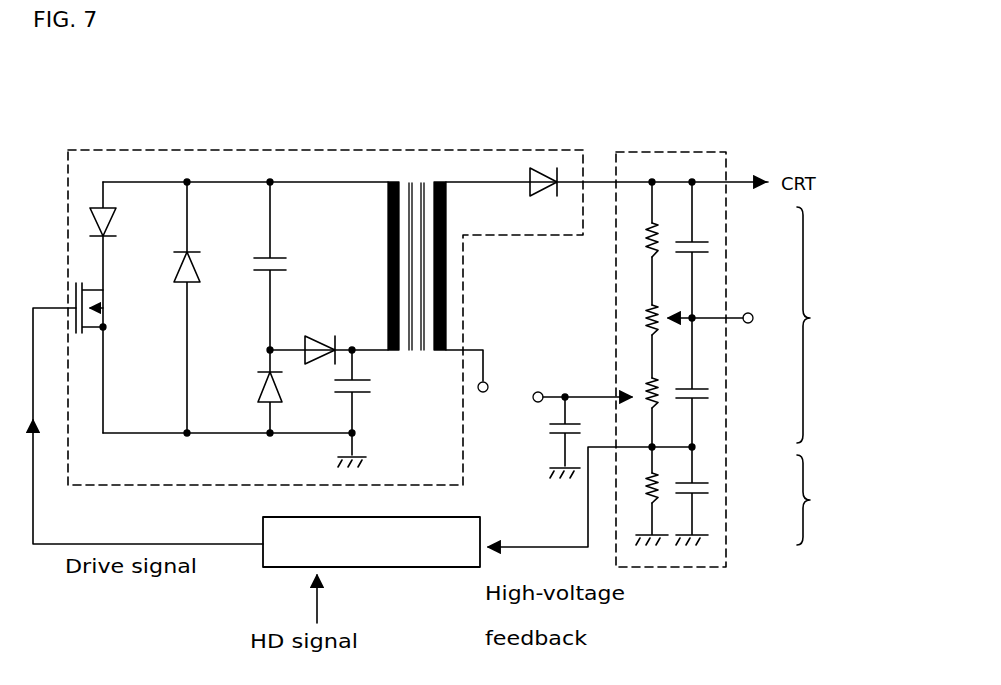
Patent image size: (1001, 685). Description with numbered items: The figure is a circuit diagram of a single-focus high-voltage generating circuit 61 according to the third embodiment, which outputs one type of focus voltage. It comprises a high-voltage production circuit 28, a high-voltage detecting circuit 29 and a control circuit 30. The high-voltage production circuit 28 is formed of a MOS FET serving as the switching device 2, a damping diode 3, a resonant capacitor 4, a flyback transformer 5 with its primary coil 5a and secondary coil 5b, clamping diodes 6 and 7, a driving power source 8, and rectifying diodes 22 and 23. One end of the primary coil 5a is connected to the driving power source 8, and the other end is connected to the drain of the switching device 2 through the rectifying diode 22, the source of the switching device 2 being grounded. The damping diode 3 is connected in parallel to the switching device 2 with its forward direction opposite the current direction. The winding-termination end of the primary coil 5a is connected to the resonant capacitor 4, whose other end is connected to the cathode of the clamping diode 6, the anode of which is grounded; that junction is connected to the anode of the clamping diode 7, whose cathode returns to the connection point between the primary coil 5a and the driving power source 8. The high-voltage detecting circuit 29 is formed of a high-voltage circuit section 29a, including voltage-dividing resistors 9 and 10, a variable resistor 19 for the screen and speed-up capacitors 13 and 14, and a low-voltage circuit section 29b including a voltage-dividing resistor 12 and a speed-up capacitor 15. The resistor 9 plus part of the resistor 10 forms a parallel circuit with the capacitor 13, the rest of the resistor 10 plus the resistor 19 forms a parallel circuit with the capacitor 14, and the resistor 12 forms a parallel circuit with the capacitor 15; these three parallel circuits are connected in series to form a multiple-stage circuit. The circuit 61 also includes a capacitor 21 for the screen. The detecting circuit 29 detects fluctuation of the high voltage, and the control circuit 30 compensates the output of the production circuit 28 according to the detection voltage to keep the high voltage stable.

The switching device 2 is at (90, 330).
The damping diode 3 is at (185, 284).
The resonant capacitor 4 is at (280, 253).
The flyback transformer 5 is at (420, 221).
The primary coil 5a is at (388, 222).
The secondary coil 5b is at (446, 220).
The clamping diode 6 is at (258, 383).
The clamping diode 7 is at (320, 338).
The driving power source 8 is at (356, 392).
The voltage-dividing resistor 9 is at (645, 243).
The voltage-dividing resistor 10 is at (645, 330).
The voltage-dividing resistor 12 is at (653, 505).
The speed-up capacitor 13 is at (703, 243).
The speed-up capacitor 14 is at (700, 388).
The speed-up capacitor 15 is at (700, 497).
The variable resistor for a screen 19 is at (655, 393).
The capacitor for the screen 21 is at (556, 433).
The rectifying diode 22 is at (116, 222).
The rectifying diode 23 is at (542, 172).
The high-voltage production circuit 28 is at (287, 150).
The high-voltage detecting circuit 29 is at (705, 152).
The high-voltage circuit section 29a is at (823, 325).
The low-voltage circuit section 29b is at (823, 500).
The control circuit 30 is at (345, 567).
The high-voltage generating circuit 61 is at (152, 121).